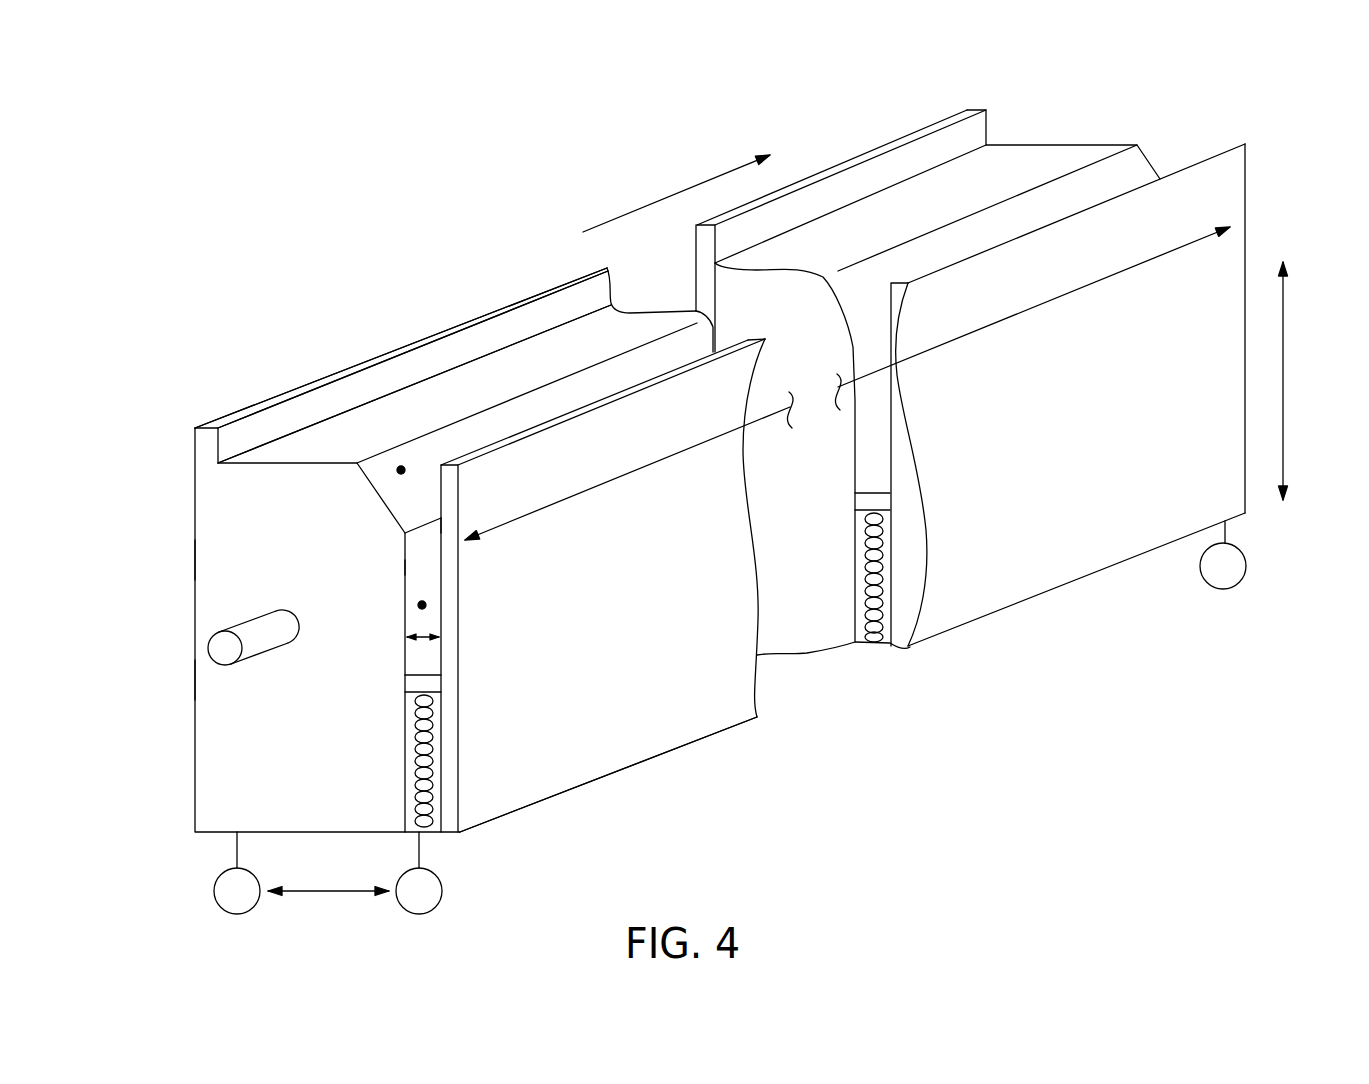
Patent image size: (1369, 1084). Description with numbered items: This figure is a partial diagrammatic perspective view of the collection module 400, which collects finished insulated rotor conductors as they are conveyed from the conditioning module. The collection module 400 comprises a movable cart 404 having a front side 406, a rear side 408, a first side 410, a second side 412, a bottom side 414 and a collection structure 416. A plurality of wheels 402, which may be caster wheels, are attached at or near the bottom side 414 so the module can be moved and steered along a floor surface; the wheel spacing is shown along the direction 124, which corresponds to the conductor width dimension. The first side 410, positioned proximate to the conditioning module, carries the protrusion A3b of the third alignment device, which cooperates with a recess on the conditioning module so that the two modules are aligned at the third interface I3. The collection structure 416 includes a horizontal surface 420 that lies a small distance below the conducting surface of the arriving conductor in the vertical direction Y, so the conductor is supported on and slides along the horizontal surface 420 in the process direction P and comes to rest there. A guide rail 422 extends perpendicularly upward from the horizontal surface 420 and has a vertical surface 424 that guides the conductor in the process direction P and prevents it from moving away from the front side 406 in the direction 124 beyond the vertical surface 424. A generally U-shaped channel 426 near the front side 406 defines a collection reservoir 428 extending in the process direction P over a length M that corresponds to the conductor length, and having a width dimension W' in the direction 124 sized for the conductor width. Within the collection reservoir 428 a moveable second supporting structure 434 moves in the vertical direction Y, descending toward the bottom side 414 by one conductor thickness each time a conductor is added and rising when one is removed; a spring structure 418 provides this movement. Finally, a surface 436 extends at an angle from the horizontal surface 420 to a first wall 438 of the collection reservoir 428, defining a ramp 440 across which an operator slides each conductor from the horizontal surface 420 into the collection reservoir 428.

The collection module 400 is at (190, 212).
The wheels 402 is at (237, 897).
The movable cart 404 is at (135, 428).
The front side 406 is at (563, 775).
The rear side 408 is at (195, 560).
The first side 410 is at (207, 682).
The second side 412 is at (1060, 143).
The bottom side 414 is at (493, 822).
The collection structure 416 is at (400, 300).
The spring structure 418 is at (428, 735).
The horizontal surface 420 is at (325, 452).
The guide rail 422 is at (468, 310).
The vertical surface 424 is at (345, 398).
The U-shaped channel 426 is at (422, 665).
The collection reservoir 428 is at (424, 605).
The second supporting structure 434 is at (412, 680).
The surface 436 is at (456, 447).
The first wall 438 is at (400, 560).
The ramp 440 is at (403, 468).
The direction 124 is at (330, 895).
The third interface I3 is at (197, 382).
The second portion of third alignment device A3b is at (215, 650).
The width dimension W' is at (404, 612).
The process direction P is at (676, 187).
The length dimension M is at (1032, 310).
The vertical direction Y is at (1310, 381).